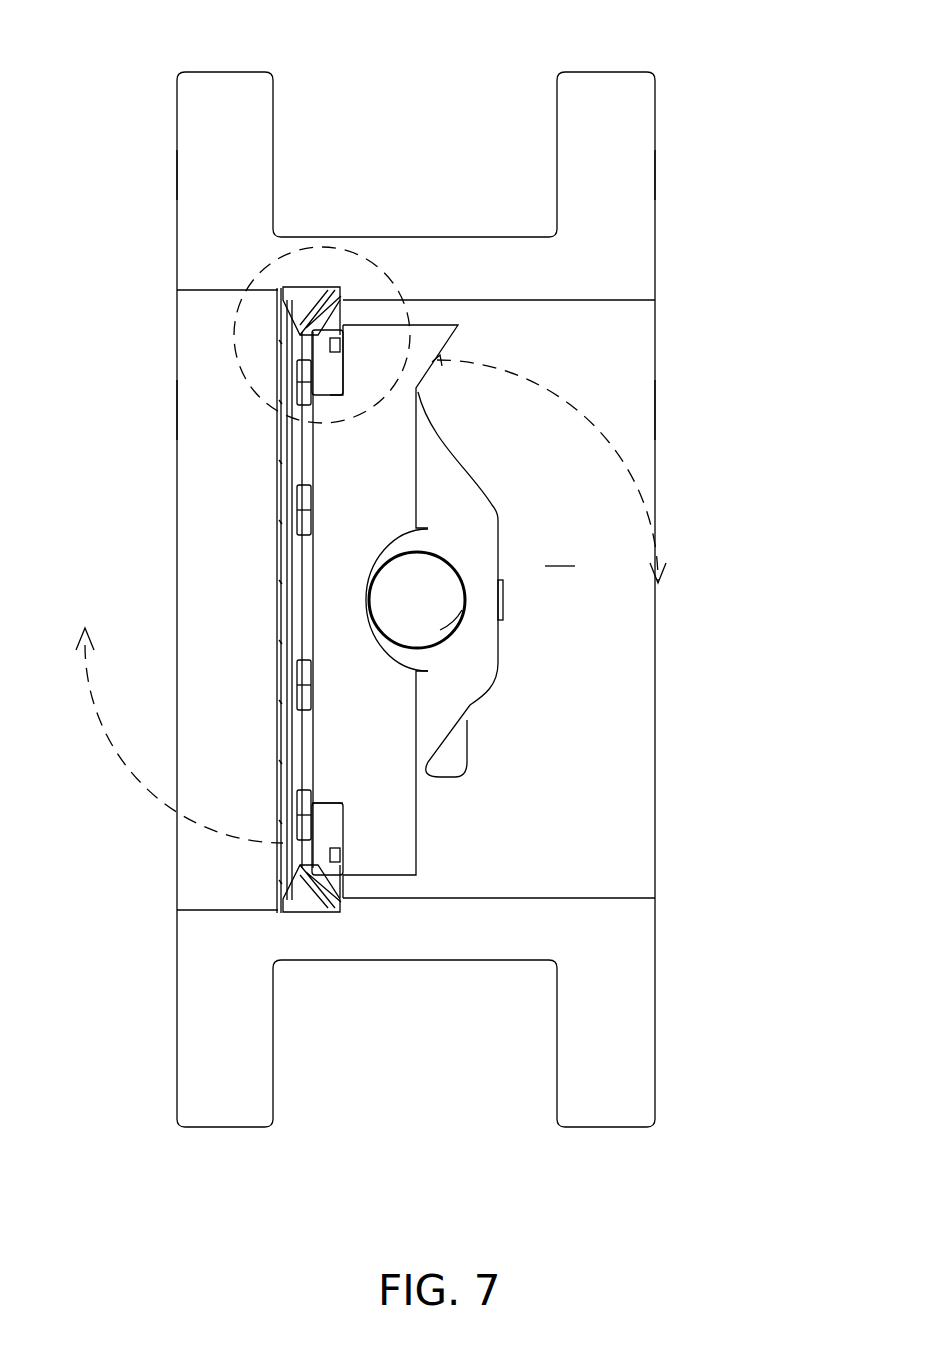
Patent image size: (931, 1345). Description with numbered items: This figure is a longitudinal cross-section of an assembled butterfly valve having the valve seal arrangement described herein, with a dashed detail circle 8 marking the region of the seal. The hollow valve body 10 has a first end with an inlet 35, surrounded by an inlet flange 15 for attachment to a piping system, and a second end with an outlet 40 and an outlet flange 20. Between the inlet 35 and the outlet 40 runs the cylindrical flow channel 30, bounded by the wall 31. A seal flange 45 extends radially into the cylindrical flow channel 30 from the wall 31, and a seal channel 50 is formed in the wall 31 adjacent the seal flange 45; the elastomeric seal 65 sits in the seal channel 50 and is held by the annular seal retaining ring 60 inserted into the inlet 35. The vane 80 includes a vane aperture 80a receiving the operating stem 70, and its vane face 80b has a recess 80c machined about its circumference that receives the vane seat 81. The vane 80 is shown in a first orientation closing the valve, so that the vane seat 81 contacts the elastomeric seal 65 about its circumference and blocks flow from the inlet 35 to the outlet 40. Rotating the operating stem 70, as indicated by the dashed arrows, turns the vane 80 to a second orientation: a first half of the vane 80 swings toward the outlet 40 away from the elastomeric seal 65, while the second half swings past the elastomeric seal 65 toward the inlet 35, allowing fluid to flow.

The detail circle of FIG. 8 is at (350, 248).
The hollow valve body 10 is at (473, 238).
The inlet flange 15 is at (220, 70).
The outlet flange 20 is at (618, 70).
The cylindrical flow channel 30 is at (444, 611).
The wall 31 is at (215, 287).
The inlet 35 is at (177, 410).
The outlet 40 is at (657, 400).
The seal flange 45 is at (342, 302).
The seal channel 50 is at (305, 290).
The annular seal retaining ring 60 is at (296, 308).
The elastomeric seal 65 is at (312, 300).
The operating stem 70 is at (431, 615).
The vane 80 is at (420, 858).
The vane aperture 80a is at (452, 622).
The vane face 80b is at (313, 627).
The recess 80c is at (330, 802).
The vane seat 81 is at (325, 822).